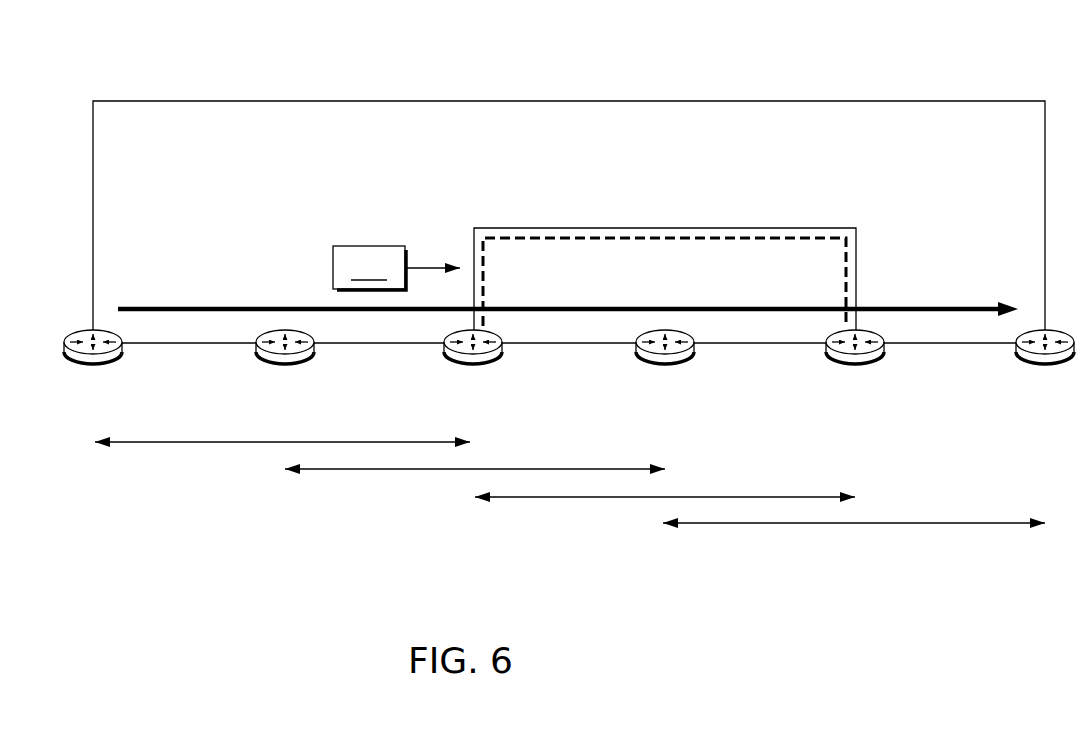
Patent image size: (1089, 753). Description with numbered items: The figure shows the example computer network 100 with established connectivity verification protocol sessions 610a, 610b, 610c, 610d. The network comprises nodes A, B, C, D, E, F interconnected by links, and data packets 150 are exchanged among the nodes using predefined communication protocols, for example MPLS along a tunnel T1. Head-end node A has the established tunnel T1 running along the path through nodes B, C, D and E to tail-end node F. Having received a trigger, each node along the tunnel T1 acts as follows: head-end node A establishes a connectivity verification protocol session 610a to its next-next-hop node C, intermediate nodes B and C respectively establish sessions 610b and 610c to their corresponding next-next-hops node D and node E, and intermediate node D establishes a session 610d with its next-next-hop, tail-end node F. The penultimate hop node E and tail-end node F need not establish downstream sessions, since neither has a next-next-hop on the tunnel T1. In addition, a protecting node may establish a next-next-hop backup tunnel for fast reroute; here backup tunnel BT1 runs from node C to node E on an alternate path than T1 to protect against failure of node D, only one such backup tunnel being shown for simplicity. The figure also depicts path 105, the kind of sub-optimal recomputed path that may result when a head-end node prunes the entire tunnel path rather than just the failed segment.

The computer network 100 is at (952, 68).
The path 105 is at (289, 100).
The data packets 150 is at (396, 268).
The tunnel T1 is at (190, 294).
The backup tunnel BT1 is at (648, 240).
The head-end node A is at (78, 365).
The intermediate node B is at (270, 365).
The intermediate node C is at (458, 365).
The intermediate node D is at (650, 365).
The penultimate hop node E is at (840, 365).
The tail-end node F is at (1030, 365).
The connectivity verification protocol session 610a is at (137, 444).
The connectivity verification protocol session 610b is at (327, 471).
The connectivity verification protocol session 610c is at (516, 499).
The connectivity verification protocol session 610d is at (705, 525).